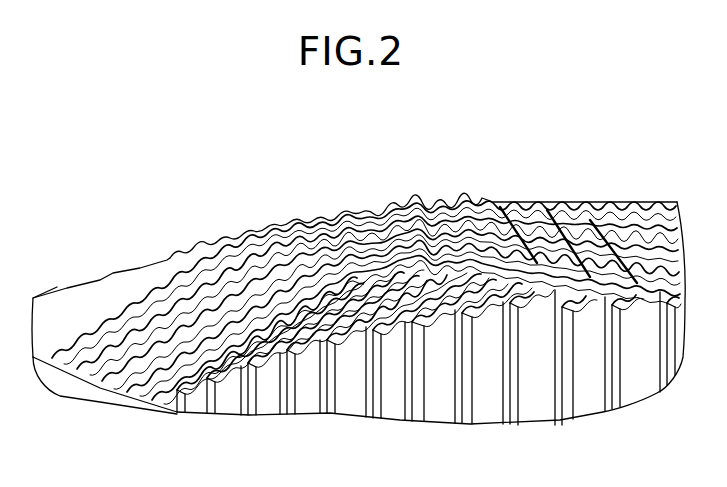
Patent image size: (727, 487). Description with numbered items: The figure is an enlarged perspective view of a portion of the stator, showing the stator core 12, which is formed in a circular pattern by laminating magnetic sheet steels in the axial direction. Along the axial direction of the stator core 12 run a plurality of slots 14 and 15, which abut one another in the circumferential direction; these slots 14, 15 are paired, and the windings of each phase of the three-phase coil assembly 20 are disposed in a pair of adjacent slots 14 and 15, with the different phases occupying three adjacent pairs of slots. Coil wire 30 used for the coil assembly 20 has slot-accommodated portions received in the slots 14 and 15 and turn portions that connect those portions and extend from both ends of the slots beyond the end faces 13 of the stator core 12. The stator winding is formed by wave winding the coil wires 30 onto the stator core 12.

The stator core 12 is at (116, 270).
The end face 13 is at (58, 300).
The slot 14 is at (178, 414).
The slot 15 is at (209, 415).
The coil assembly 20 is at (414, 198).
The coil wire 30 is at (565, 214).